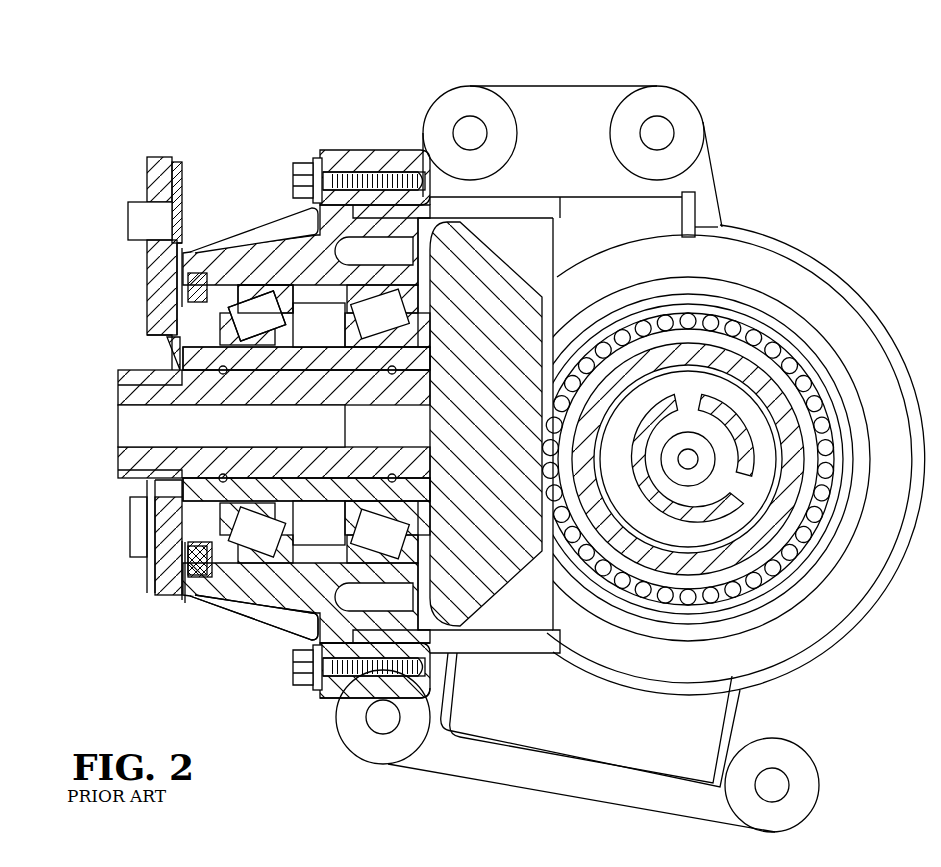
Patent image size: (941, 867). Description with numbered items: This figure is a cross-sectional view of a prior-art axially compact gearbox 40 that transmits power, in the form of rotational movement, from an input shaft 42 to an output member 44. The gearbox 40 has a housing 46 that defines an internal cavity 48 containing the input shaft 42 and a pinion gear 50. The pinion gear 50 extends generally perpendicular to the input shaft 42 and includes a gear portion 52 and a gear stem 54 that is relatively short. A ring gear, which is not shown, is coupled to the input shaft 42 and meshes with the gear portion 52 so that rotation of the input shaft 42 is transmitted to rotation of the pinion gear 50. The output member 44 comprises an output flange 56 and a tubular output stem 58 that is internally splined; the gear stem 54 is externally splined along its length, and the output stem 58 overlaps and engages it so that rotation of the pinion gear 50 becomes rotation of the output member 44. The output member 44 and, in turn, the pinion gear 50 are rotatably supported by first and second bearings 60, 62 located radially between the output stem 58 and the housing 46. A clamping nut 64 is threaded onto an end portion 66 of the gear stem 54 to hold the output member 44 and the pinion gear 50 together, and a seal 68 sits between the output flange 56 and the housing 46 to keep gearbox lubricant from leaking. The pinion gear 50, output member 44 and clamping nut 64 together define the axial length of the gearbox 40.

The axially compact gearbox 40 is at (862, 195).
The input shaft 42 is at (773, 387).
The output member 44 is at (140, 160).
The housing 46 is at (557, 97).
The internal cavity 48 is at (557, 220).
The pinion gear 50 is at (472, 615).
The gear portion 52 is at (490, 568).
The gear stem 54 is at (298, 467).
The output flange 56 is at (153, 297).
The tubular output stem 58 is at (275, 613).
The first bearing 60 is at (397, 310).
The second bearing 62 is at (252, 312).
The clamping nut 64 is at (130, 497).
The end portion 66 is at (120, 392).
The seal 68 is at (187, 600).